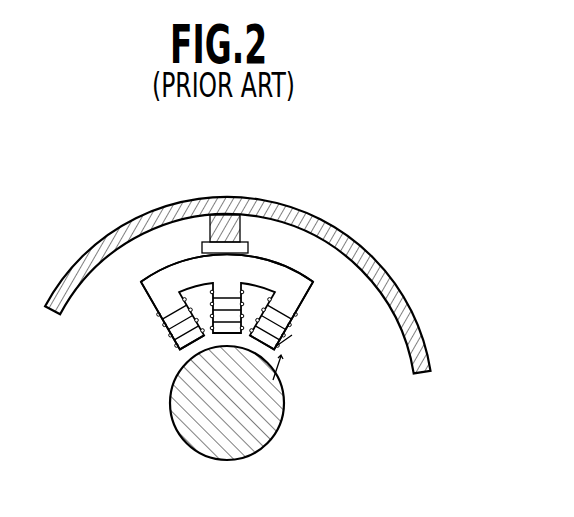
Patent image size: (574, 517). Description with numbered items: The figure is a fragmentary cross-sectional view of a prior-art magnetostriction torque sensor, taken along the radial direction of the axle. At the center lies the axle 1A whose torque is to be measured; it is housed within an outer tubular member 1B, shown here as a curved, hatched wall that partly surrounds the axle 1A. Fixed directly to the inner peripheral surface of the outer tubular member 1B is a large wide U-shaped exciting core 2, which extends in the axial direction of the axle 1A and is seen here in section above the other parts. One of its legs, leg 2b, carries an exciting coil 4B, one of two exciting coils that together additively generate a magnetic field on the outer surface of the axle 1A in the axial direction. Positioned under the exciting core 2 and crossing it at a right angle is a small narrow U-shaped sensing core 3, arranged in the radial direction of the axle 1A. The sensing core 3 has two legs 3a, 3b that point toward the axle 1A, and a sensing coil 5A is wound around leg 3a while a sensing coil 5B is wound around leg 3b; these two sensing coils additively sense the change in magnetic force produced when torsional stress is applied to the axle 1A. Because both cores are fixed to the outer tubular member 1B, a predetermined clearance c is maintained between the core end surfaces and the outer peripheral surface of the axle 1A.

The axle 1A is at (270, 402).
The outer tubular member 1B is at (412, 325).
The exciting core 2 is at (223, 218).
The leg of the exciting core 2b is at (218, 307).
The sensing core 3 is at (293, 278).
The leg of the sensing core 3a is at (288, 323).
The leg of the sensing core 3b is at (178, 327).
The exciting coil 4B is at (222, 283).
The sensing coil 5A is at (278, 297).
The sensing coil 5B is at (170, 303).
The clearance c is at (280, 346).